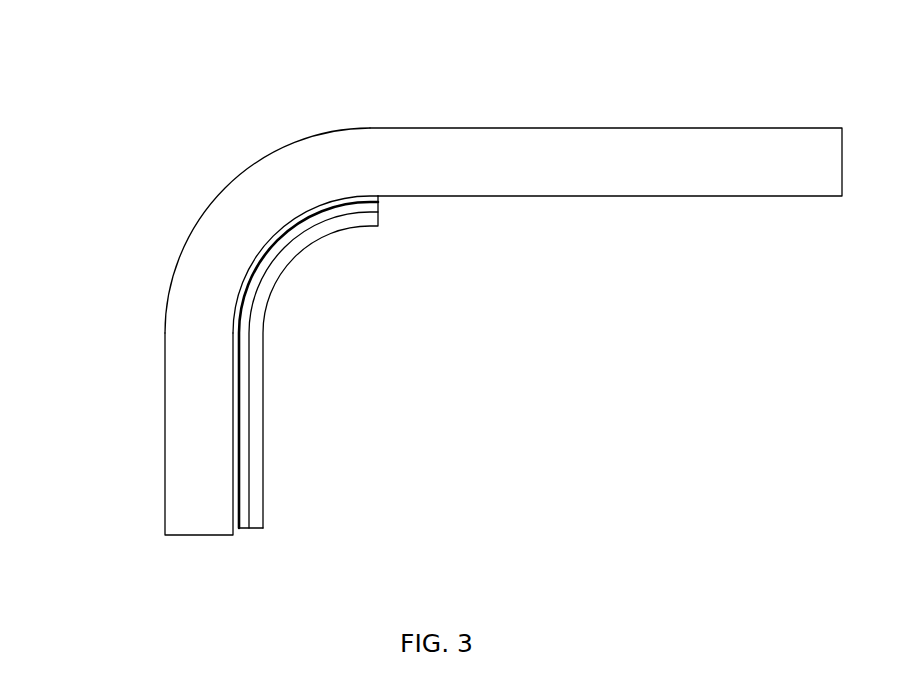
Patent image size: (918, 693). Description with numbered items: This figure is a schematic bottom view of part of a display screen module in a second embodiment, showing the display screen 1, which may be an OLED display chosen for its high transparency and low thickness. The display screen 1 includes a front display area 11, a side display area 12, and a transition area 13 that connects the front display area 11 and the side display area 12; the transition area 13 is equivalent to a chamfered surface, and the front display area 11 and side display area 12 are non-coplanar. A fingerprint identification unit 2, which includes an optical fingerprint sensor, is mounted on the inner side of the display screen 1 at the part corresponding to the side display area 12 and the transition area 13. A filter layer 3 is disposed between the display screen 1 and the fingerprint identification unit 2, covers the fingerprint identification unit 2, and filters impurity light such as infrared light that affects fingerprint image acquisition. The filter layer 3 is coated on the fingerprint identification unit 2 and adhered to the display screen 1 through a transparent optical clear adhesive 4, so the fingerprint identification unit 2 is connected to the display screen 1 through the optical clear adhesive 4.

The display screen 1 is at (450, 292).
The front display area 11 is at (532, 130).
The side display area 12 is at (165, 463).
The transition area 13 is at (262, 160).
The fingerprint identification unit 2 is at (257, 330).
The filter layer 3 is at (243, 387).
The optical clear adhesive 4 is at (234, 430).